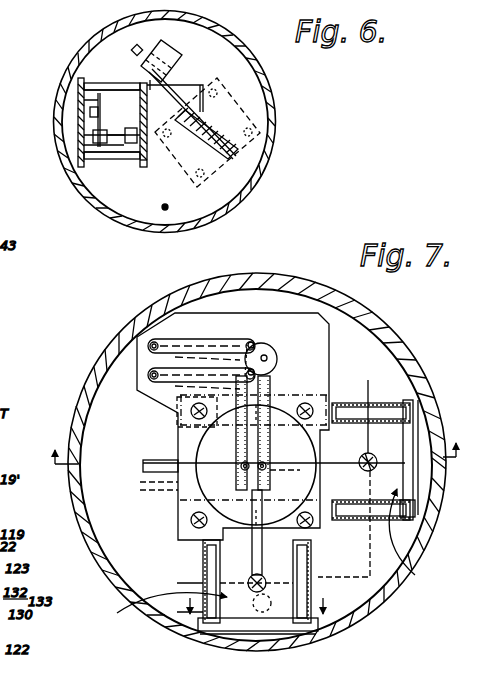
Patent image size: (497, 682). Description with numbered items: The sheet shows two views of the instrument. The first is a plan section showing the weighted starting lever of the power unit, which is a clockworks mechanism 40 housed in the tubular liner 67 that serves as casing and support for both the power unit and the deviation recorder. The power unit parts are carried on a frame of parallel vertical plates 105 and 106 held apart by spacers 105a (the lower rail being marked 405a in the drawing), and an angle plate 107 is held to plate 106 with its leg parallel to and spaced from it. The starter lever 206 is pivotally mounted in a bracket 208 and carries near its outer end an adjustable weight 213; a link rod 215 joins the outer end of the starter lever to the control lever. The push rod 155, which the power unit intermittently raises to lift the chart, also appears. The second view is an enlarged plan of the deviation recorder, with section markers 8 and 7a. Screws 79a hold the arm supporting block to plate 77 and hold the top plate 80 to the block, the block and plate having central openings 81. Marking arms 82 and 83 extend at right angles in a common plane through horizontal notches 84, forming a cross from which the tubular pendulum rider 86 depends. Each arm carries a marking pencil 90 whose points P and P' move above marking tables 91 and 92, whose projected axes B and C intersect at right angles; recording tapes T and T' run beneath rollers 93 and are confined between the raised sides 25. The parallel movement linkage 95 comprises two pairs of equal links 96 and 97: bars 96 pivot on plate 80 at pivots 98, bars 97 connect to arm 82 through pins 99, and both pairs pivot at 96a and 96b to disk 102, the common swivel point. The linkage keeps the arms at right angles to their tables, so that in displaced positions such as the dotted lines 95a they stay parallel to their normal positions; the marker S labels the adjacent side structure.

In FIG. 6, the tubular liner 67 is at (270, 157).
In FIG. 7, the tubular liner 67 is at (397, 353).
In FIG. 6, the vertical plate 105 is at (80, 125).
In FIG. 6, the spacers 105a is at (98, 82).
In FIG. 6, the frame bottom rail 405a is at (140, 160).
In FIG. 6, the vertical plate 106 is at (145, 167).
In FIG. 6, the angle plate 107 is at (191, 83).
In FIG. 6, the starter lever 206 is at (175, 120).
In FIG. 6, the bracket 208 is at (203, 147).
In FIG. 6, the weight 213 is at (152, 50).
In FIG. 6, the link rod 215 is at (134, 50).
In FIG. 6, the push rod 155 is at (163, 210).
In FIG. 7, the top plate 80 is at (330, 357).
In FIG. 7, the screws 79a is at (190, 412).
In FIG. 7, the central openings 81 is at (274, 465).
In FIG. 7, the marking arm 82 is at (287, 460).
In FIG. 7, the marking arm 83 is at (266, 520).
In FIG. 7, the notches 84 is at (177, 431).
In FIG. 7, the pendulum rider 86 is at (271, 472).
In FIG. 7, the marking pencil 90 is at (416, 424).
In FIG. 7, the marking table 91 is at (217, 636).
In FIG. 7, the marking table 92 is at (383, 452).
In FIG. 7, the roller 93 is at (393, 416).
In FIG. 7, the parallel movement linkage 95 is at (284, 365).
In FIG. 7, the dotted lines 95a is at (140, 484).
In FIG. 7, the parallel bars 96 is at (188, 372).
In FIG. 7, the pivot 96a is at (252, 344).
In FIG. 7, the pivot 96b is at (264, 359).
In FIG. 7, the parallel bars 97 is at (269, 401).
In FIG. 7, the pivots 98 is at (148, 376).
In FIG. 7, the pins 99 is at (260, 471).
In FIG. 7, the disk 102 is at (263, 356).
In FIG. 7, the raised sides 25 is at (262, 636).
In FIG. 7, the section line 8 is at (253, 462).
In FIG. 7, the section arrows 7a is at (258, 598).
In FIG. 7, the projected longitudinal axis B is at (372, 404).
In FIG. 7, the marking pencil point P is at (264, 587).
In FIG. 7, the marking pencil point P' is at (347, 504).
In FIG. 7, the projected longitudinal axis C is at (190, 583).
In FIG. 7, the recording tape T is at (163, 603).
In FIG. 7, the recording tape T' is at (406, 536).
In FIG. 7, the element S is at (439, 479).
In FIG. 7, the plate 77 is at (79, 508).
In FIG. 7, the clockworks mechanism 40 is at (0, 362).